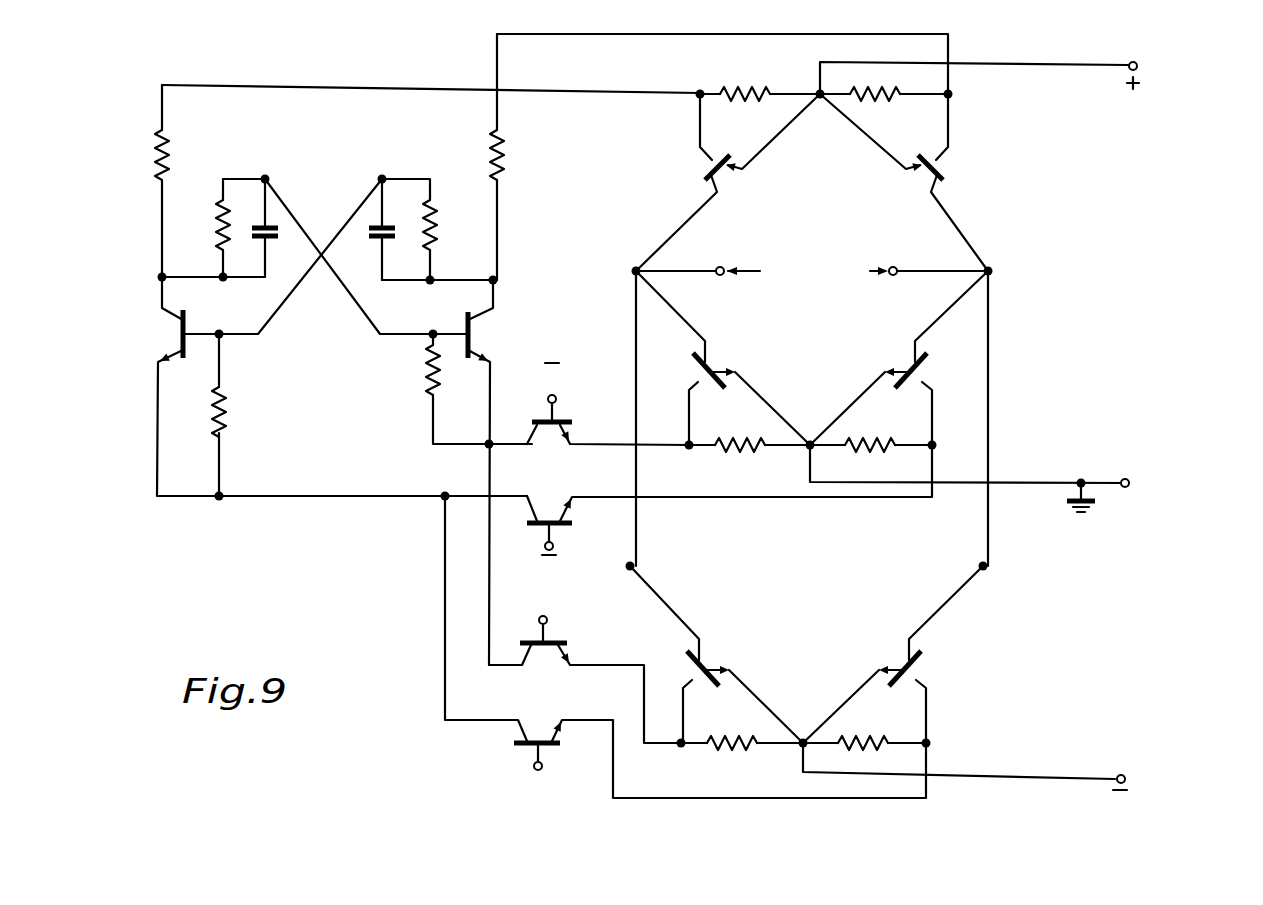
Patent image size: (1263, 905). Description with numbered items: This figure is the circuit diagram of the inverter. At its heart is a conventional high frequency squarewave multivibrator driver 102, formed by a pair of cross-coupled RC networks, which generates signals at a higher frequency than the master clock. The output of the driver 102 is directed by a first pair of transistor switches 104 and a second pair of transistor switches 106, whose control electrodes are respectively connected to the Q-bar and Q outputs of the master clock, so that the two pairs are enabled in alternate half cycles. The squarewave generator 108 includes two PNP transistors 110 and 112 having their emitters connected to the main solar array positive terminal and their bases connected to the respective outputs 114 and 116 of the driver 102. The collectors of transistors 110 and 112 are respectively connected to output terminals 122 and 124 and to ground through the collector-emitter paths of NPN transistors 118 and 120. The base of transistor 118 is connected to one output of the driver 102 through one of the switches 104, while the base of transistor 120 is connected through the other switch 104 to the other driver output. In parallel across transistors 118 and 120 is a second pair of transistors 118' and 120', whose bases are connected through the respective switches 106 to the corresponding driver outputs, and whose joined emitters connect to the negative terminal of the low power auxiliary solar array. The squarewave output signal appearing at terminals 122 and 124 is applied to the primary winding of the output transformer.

The multivibrator driver 102 is at (343, 375).
The first pair of transistor switches 104 is at (554, 427).
The second pair of transistor switches 106 is at (545, 648).
The squarewave generator 108 is at (800, 238).
The PNP transistor 110 is at (722, 172).
The PNP transistor 112 is at (920, 170).
The output of the multivibrator driver 114 is at (497, 120).
The output of the multivibrator driver 116 is at (345, 86).
The NPN transistor 118 is at (723, 358).
The NPN transistor 120 is at (899, 358).
The transistor 118' is at (716, 654).
The transistor 120' is at (893, 654).
The output terminal 122 is at (720, 276).
The output terminal 124 is at (891, 276).